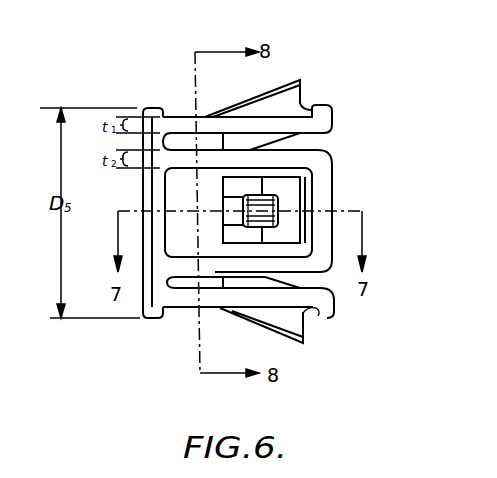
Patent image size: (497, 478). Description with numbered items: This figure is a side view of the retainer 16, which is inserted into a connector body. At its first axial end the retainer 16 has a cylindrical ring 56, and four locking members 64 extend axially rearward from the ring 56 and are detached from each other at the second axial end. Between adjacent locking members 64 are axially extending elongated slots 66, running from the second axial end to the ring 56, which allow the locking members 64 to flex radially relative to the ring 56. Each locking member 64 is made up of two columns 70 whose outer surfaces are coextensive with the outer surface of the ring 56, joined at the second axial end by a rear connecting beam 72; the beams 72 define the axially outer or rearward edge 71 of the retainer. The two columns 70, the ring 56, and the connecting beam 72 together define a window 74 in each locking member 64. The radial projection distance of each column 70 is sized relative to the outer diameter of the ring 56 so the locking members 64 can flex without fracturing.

The retainer 16 is at (317, 41).
The cylindrical ring 56 is at (157, 107).
The locking member 64 is at (318, 108).
The elongated slot 66 is at (312, 282).
The column 70 is at (203, 160).
The rearward edge 71 is at (332, 165).
The rear connecting beam 72 is at (313, 104).
The window 74 is at (185, 197).